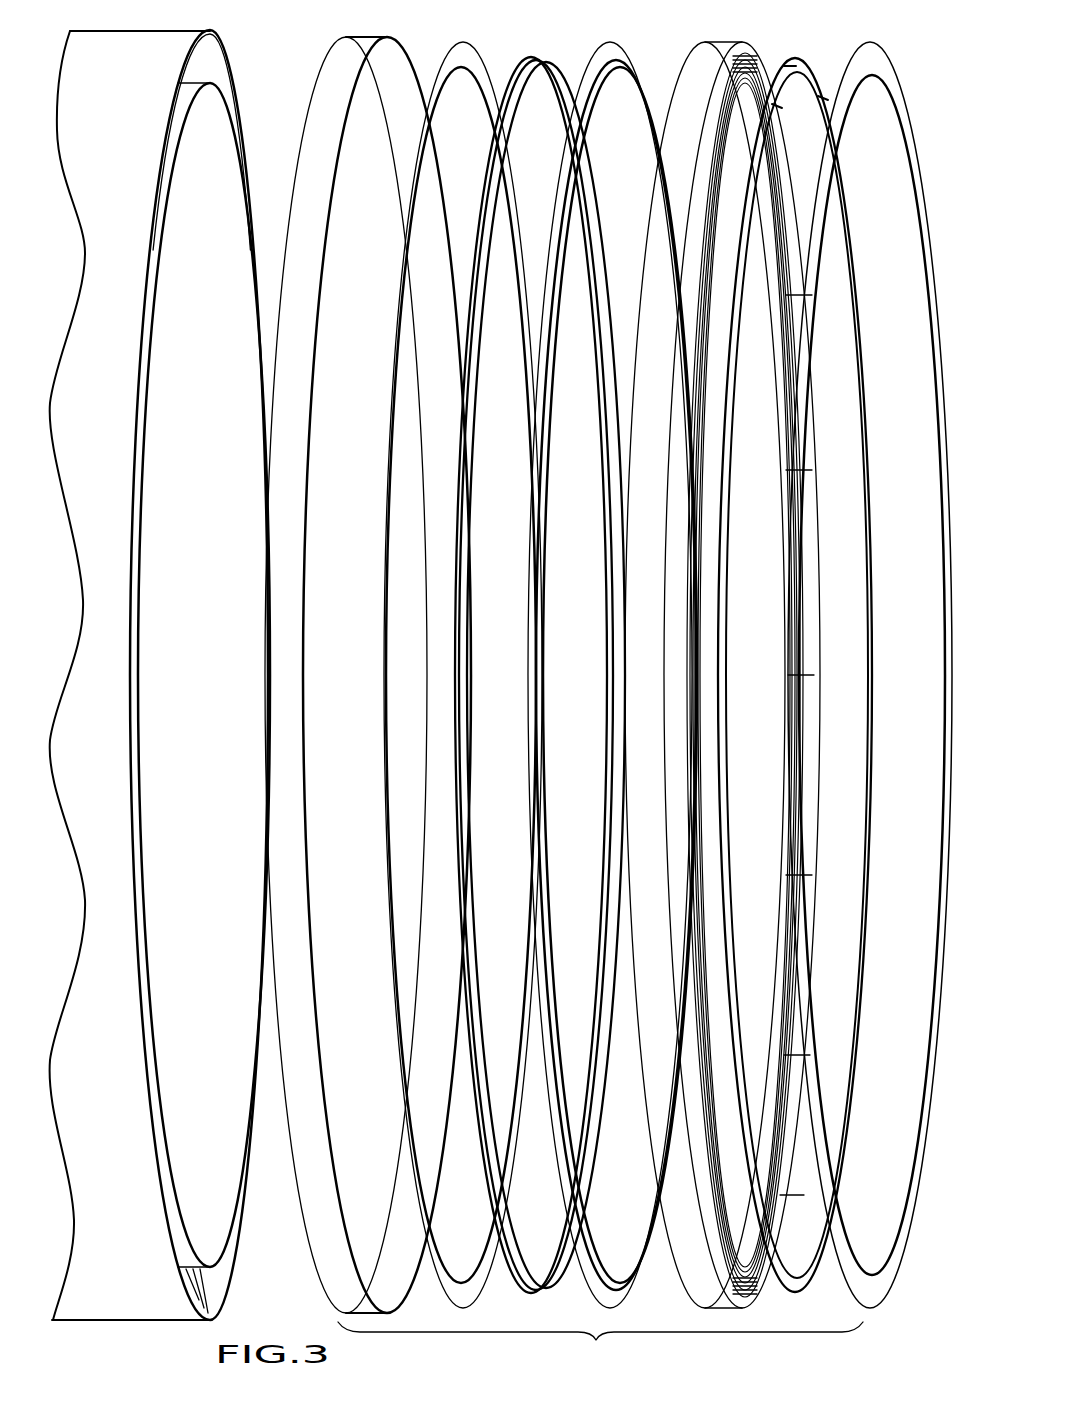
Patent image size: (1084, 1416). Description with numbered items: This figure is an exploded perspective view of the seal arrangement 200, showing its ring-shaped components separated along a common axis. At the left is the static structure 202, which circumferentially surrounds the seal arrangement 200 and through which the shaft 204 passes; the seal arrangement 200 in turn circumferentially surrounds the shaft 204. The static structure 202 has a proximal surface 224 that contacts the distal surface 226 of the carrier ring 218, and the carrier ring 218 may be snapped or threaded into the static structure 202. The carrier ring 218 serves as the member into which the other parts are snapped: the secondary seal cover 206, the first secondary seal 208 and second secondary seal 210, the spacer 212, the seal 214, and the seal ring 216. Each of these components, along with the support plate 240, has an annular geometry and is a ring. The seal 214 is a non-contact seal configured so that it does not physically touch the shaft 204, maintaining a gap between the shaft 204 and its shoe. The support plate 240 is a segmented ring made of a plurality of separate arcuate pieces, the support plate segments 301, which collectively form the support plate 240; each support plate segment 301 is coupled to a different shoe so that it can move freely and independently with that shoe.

The seal arrangement 200 is at (600, 1347).
The static structure 202 is at (128, 60).
The shaft 204 is at (217, 116).
The secondary seal cover 206 is at (478, 63).
The first secondary seal 208 is at (573, 70).
The second secondary seal 210 is at (534, 54).
The spacer 212 is at (638, 63).
The seal 214 is at (720, 46).
The seal ring 216 is at (895, 58).
The carrier ring 218 is at (332, 74).
The proximal surface 224 is at (228, 66).
The distal surface 226 is at (348, 42).
The support plate 240 is at (818, 72).
The support plate segment 301 is at (790, 63).